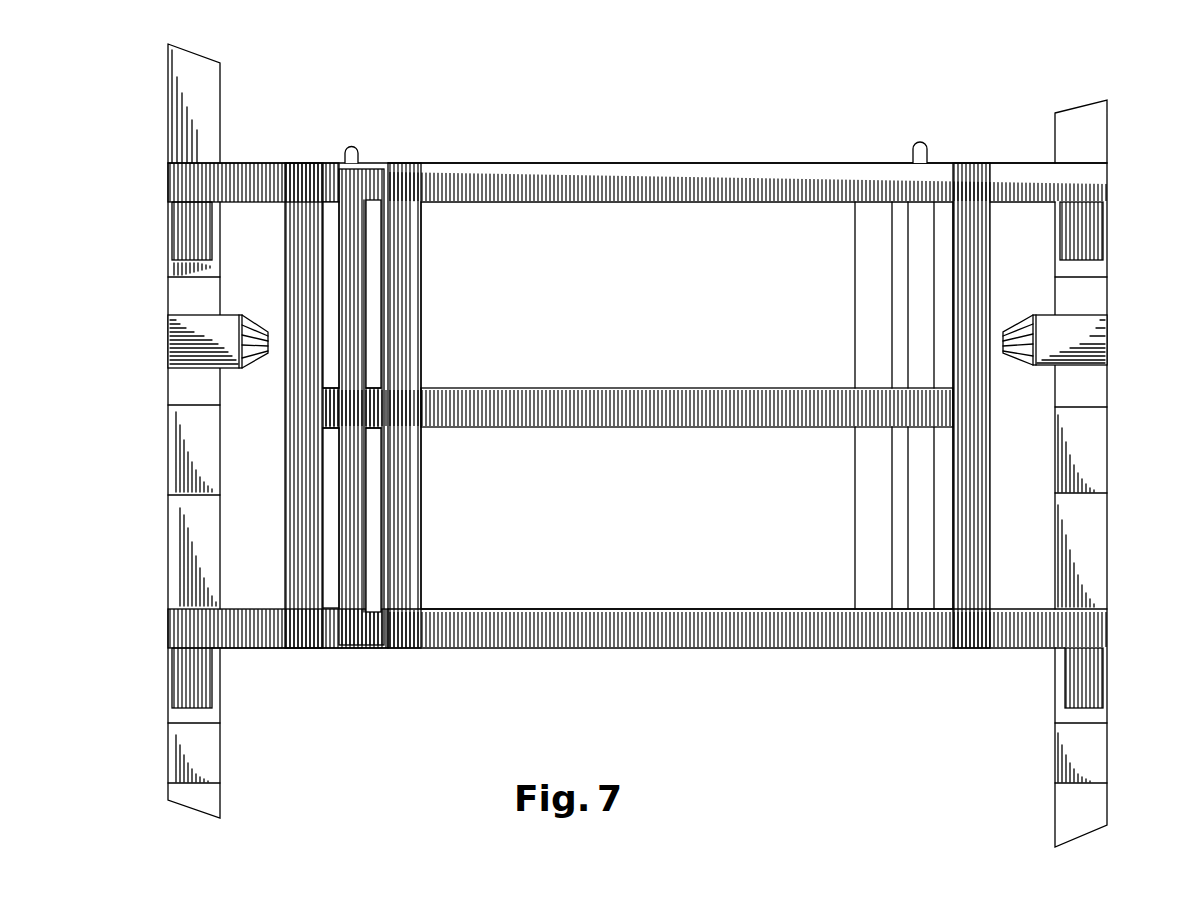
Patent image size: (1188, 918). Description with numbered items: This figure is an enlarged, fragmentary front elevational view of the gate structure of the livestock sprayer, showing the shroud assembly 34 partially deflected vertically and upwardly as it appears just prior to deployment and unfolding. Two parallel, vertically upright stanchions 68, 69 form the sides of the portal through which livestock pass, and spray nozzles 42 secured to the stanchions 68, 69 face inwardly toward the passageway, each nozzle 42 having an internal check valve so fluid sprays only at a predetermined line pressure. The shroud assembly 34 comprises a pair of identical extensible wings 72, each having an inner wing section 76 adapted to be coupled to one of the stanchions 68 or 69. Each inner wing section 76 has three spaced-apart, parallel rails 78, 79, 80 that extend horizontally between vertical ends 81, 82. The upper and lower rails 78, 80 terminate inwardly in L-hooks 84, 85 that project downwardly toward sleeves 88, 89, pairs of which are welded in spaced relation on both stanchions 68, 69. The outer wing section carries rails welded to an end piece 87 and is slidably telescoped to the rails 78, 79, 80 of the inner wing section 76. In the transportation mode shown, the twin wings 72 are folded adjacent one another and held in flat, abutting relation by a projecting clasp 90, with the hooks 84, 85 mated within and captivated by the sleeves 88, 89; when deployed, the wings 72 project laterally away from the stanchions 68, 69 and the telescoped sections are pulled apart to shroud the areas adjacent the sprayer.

The shroud assembly 34 is at (530, 114).
The spray nozzle 42 is at (182, 330).
The stanchion 68 is at (1100, 528).
The stanchion 69 is at (178, 528).
The wing 72 is at (256, 161).
The inner wing section 76 is at (698, 220).
The rail 78 is at (522, 187).
The rail 79 is at (723, 397).
The rail 80 is at (720, 627).
The vertical end 81 is at (404, 518).
The vertical end 82 is at (302, 500).
The L-hook 84 is at (188, 235).
The L-hook 85 is at (183, 665).
The end piece 87 is at (357, 320).
The sleeve 88 is at (183, 292).
The sleeve 89 is at (187, 745).
The clasp 90 is at (930, 148).